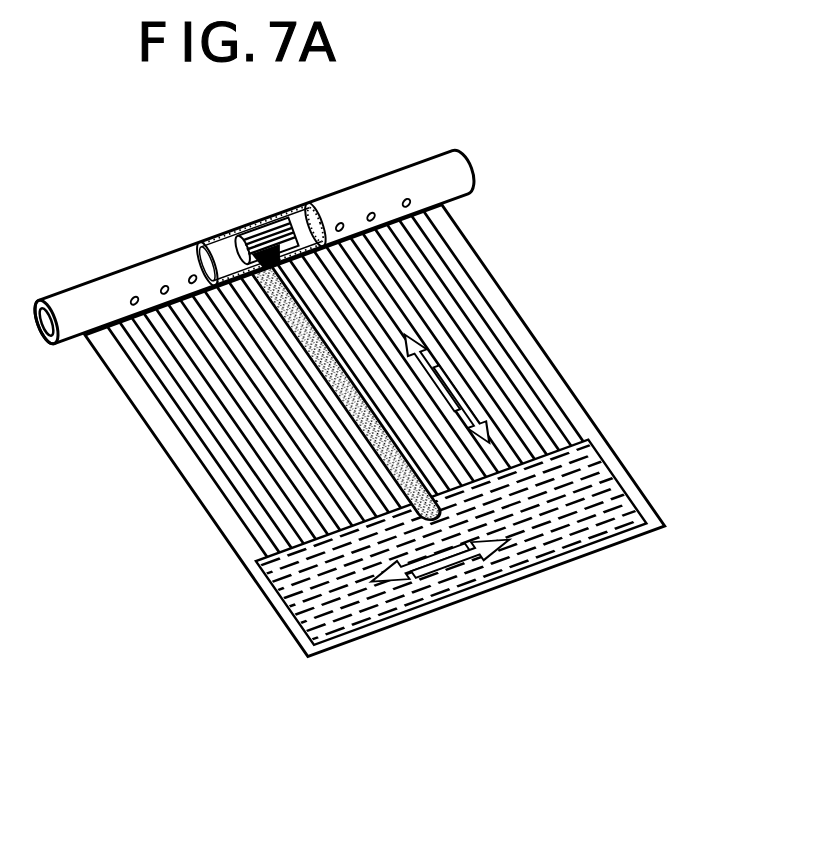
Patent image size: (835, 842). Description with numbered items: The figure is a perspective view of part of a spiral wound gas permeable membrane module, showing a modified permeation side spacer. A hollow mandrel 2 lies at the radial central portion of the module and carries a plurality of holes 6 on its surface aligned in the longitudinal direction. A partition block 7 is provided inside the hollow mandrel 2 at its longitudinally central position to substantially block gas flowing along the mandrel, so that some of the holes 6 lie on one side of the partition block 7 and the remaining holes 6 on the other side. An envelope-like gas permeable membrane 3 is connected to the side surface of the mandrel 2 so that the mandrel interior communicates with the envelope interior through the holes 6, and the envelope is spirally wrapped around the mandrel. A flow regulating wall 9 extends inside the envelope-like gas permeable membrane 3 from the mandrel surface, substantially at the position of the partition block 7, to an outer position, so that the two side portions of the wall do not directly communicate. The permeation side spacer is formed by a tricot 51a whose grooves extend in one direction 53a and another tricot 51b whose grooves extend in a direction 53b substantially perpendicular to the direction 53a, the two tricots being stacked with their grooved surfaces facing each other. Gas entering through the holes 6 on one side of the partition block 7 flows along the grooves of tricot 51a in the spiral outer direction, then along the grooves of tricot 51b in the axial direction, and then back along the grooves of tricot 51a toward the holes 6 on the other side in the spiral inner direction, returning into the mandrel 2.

The hollow mandrel 2 is at (423, 172).
The envelope-like gas permeable membrane 3 is at (135, 393).
The holes 6 is at (374, 212).
The partition block 7 is at (257, 228).
The flow regulating wall 9 is at (350, 395).
The tricot 51a is at (462, 273).
The tricot 51b is at (283, 606).
The direction 53a is at (450, 388).
The direction 53b is at (458, 560).